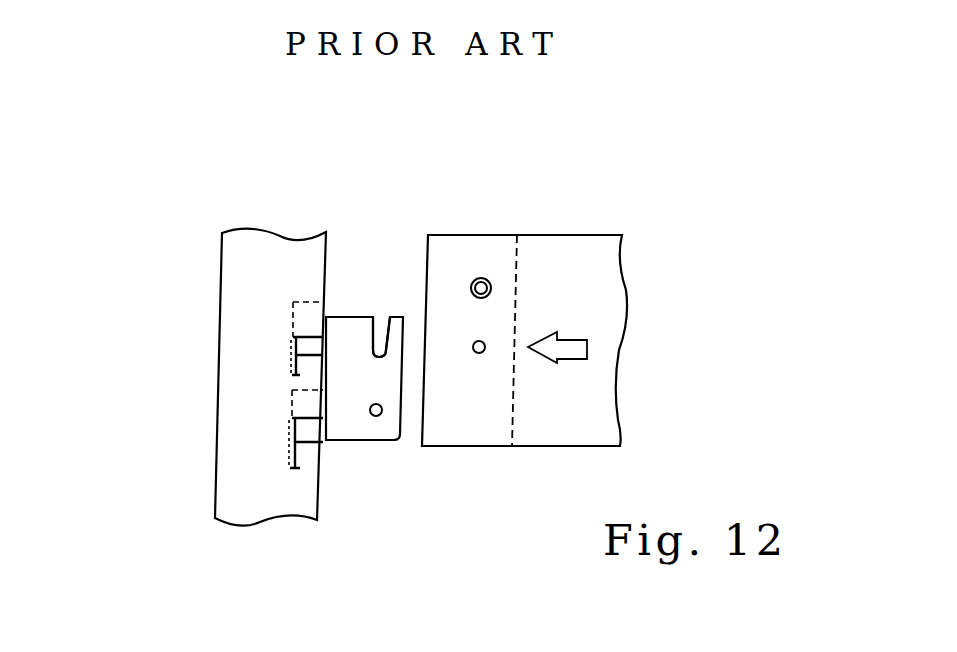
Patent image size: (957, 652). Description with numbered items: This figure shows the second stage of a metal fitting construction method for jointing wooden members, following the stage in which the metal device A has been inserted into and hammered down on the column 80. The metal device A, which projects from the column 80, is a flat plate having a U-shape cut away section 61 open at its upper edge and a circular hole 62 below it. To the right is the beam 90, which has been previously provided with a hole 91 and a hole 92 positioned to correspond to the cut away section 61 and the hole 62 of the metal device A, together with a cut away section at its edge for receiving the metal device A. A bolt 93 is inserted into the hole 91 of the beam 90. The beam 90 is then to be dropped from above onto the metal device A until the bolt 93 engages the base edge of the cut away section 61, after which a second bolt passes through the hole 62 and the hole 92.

The column 80 is at (237, 398).
The U-shape cut away section 61 is at (382, 333).
The circular hole 62 is at (374, 417).
The metal device A is at (410, 452).
The beam 90 is at (590, 292).
The hole 91 is at (478, 280).
The hole 92 is at (478, 353).
The bolt 93 is at (487, 280).